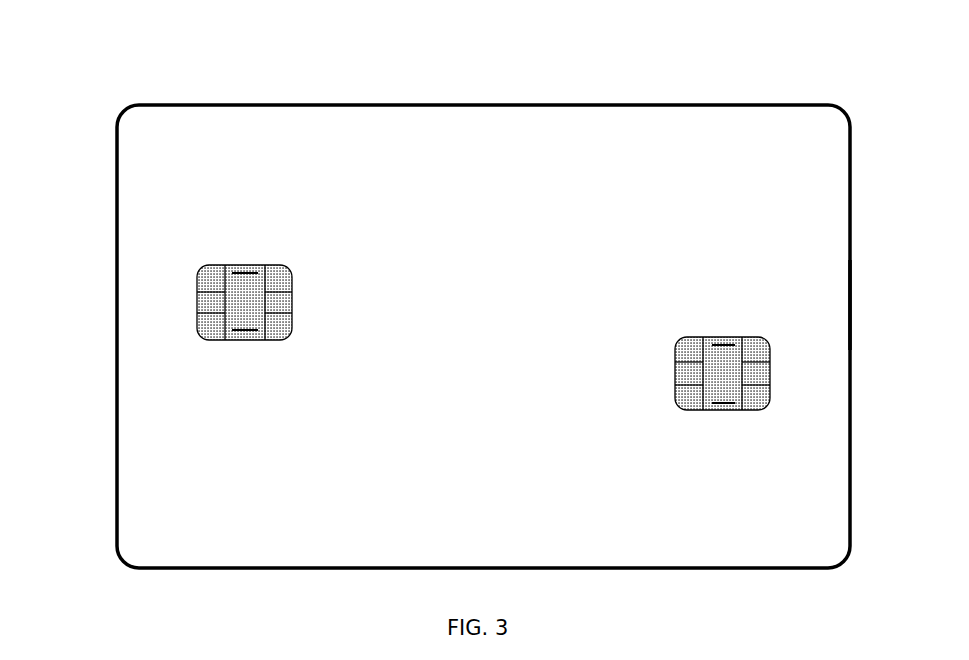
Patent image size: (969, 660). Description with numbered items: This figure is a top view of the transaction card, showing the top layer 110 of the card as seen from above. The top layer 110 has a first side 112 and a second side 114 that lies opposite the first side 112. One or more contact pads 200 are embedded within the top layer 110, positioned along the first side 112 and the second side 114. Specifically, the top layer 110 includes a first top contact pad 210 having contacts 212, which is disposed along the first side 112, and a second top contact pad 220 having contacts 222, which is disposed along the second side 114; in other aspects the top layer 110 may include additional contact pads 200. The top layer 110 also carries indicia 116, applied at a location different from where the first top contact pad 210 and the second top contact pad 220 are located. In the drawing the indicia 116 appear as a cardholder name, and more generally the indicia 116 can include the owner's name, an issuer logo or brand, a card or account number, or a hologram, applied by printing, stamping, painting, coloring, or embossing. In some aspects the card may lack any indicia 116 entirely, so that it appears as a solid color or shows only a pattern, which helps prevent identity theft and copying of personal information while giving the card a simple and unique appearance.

The top layer 110 is at (818, 180).
The first side 112 is at (138, 222).
The second side 114 is at (825, 309).
The indicia 116 is at (195, 520).
The contact pads 200 is at (158, 194).
The first top contact pad 210 is at (195, 300).
The contacts 212 is at (195, 330).
The second top contact pad 220 is at (222, 265).
The contacts 222 is at (760, 400).